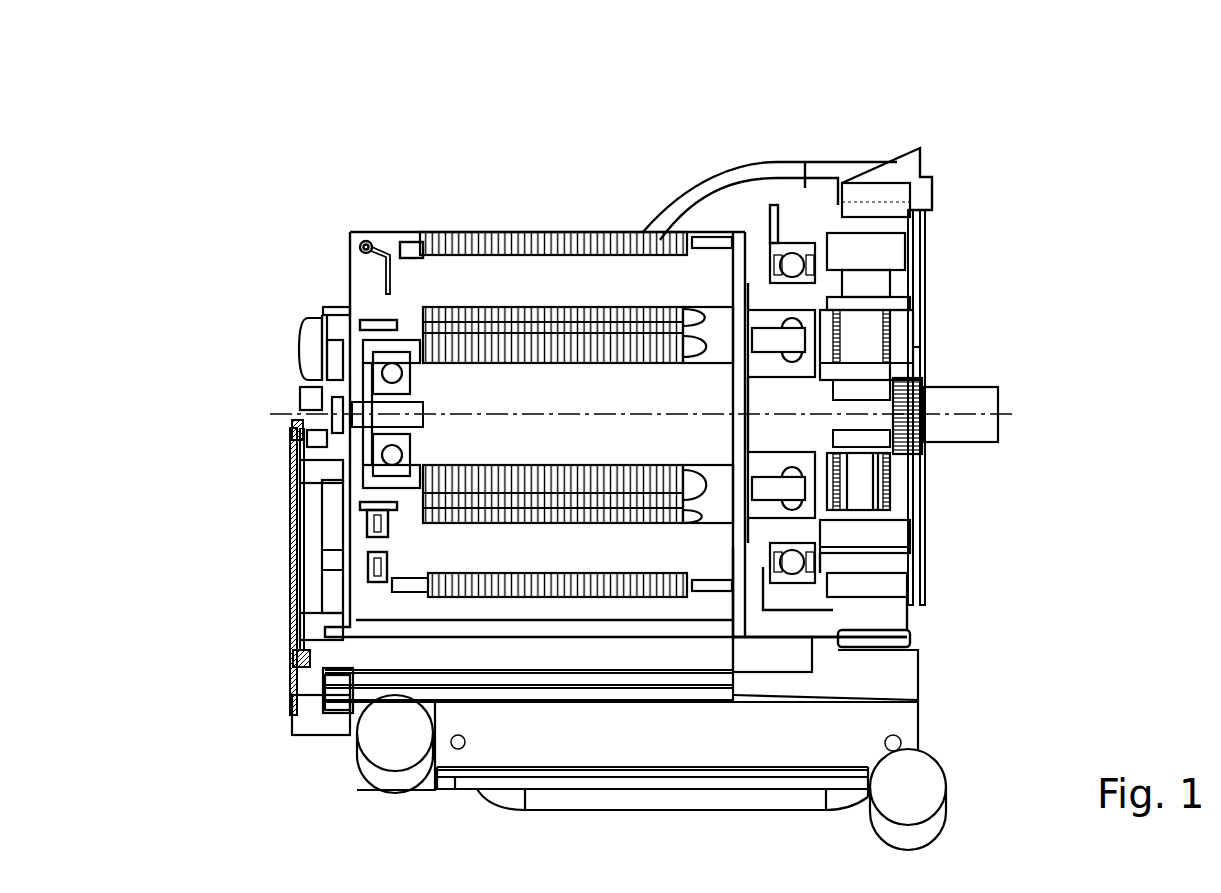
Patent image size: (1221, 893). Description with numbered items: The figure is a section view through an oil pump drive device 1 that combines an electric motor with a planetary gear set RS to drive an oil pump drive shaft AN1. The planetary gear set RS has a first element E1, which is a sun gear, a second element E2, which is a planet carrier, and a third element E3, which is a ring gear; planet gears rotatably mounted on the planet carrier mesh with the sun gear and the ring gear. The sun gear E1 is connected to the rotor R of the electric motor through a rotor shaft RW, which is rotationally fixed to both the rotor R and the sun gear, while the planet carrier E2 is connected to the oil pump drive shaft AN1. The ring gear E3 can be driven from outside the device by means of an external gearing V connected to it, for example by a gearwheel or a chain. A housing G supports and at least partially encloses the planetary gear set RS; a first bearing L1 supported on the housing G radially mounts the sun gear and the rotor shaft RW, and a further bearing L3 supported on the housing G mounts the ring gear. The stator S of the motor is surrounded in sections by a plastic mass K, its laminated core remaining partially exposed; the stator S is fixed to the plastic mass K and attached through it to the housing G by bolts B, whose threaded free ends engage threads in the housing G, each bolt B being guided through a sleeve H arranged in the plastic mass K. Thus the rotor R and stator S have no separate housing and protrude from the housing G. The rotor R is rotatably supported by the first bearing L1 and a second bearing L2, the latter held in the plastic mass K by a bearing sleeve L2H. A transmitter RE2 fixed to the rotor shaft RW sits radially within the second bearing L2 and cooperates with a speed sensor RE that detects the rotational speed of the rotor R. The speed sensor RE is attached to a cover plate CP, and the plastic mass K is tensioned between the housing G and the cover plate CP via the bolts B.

The oil pump drive device 1 is at (950, 132).
The plastic mass K is at (448, 283).
The stator S is at (480, 233).
The rotor shaft RW is at (550, 385).
The rotor R is at (593, 347).
The first bearing L1 is at (765, 320).
The further bearing L3 is at (777, 250).
The housing G is at (793, 197).
The external gearing V is at (862, 197).
The third element E3 is at (862, 247).
The planetary gear set RS is at (930, 280).
The second element E2 is at (912, 363).
The oil pump drive shaft AN1 is at (970, 402).
The first element E1 is at (866, 446).
The bearing sleeve L2H is at (403, 347).
The second bearing L2 is at (385, 352).
The transmitter RE2 is at (357, 403).
The speed sensor RE is at (293, 430).
The cover plate CP is at (345, 505).
The bolt B is at (567, 653).
The sleeve H is at (632, 678).